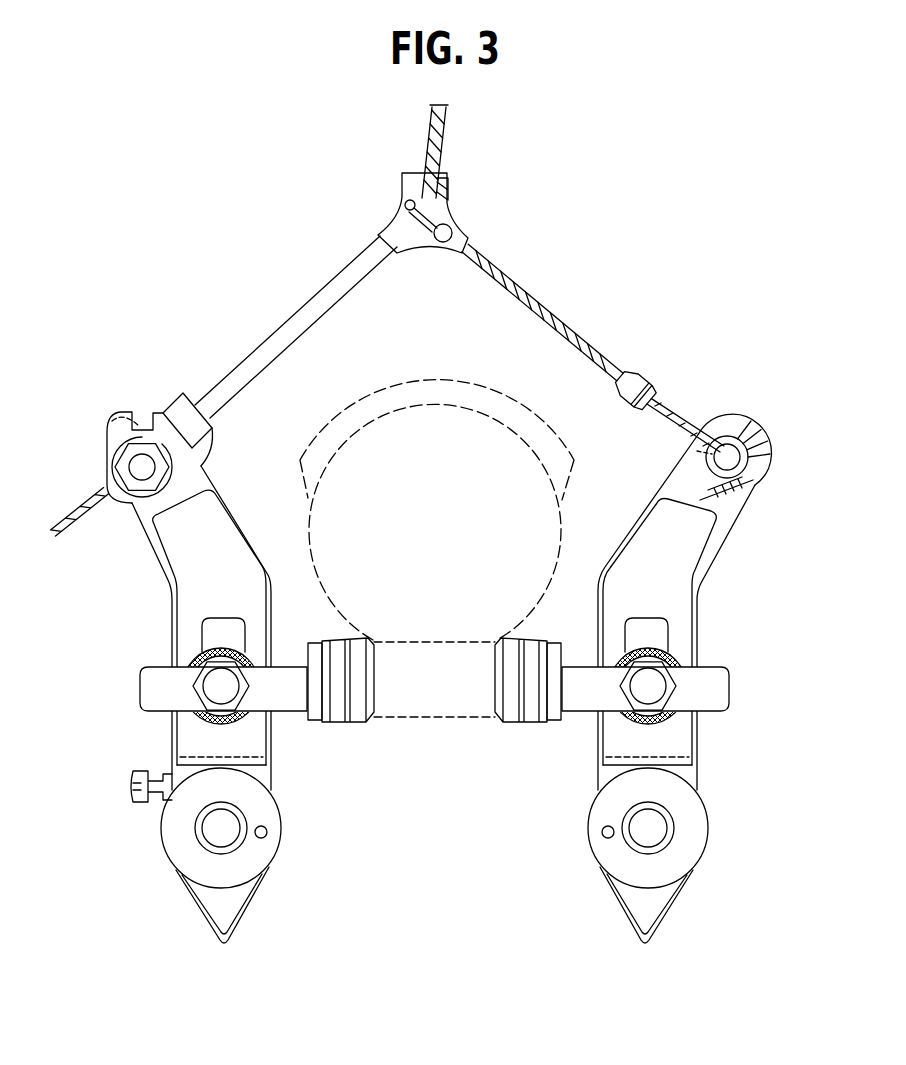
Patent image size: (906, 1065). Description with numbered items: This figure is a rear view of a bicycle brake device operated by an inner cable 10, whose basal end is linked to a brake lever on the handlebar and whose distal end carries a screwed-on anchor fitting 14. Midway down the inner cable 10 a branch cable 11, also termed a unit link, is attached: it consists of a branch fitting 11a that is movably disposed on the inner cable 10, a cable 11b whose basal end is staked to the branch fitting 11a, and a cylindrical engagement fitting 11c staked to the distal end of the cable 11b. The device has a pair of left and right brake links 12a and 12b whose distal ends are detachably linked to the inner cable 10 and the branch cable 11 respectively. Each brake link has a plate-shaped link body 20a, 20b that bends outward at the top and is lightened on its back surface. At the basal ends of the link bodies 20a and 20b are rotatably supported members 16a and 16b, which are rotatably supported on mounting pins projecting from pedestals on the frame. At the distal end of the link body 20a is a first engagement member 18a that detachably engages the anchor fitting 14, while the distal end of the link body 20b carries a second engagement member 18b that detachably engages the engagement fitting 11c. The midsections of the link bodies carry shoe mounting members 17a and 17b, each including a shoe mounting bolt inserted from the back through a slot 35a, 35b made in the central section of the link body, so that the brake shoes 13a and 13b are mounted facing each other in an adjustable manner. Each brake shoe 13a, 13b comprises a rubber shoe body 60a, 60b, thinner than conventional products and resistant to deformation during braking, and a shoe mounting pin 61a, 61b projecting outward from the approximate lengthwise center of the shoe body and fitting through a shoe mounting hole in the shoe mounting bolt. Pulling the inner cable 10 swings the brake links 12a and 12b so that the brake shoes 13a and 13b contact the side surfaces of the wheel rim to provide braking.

The inner cable 10 is at (447, 130).
The branch cable 11 is at (606, 345).
The branch fitting 11a is at (457, 224).
The cable 11b is at (546, 304).
The engagement fitting 11c is at (727, 445).
The brake link 12a is at (258, 616).
The brake link 12b is at (700, 600).
The brake shoe 13a is at (292, 722).
The brake shoe 13b is at (556, 750).
The anchor fitting 14 is at (161, 409).
The rotatably supported member 16a is at (278, 847).
The rotatably supported member 16b is at (707, 855).
The shoe mounting member 17a is at (170, 650).
The shoe mounting member 17b is at (690, 648).
The first engagement member 18a is at (106, 462).
The second engagement member 18b is at (749, 481).
The link body 20a is at (237, 518).
The link body 20b is at (714, 548).
The slot 35a is at (222, 634).
The slot 35b is at (646, 636).
The shoe body 60a is at (348, 722).
The shoe body 60b is at (528, 720).
The shoe mounting pin 61a is at (278, 700).
The shoe mounting pin 61b is at (714, 706).